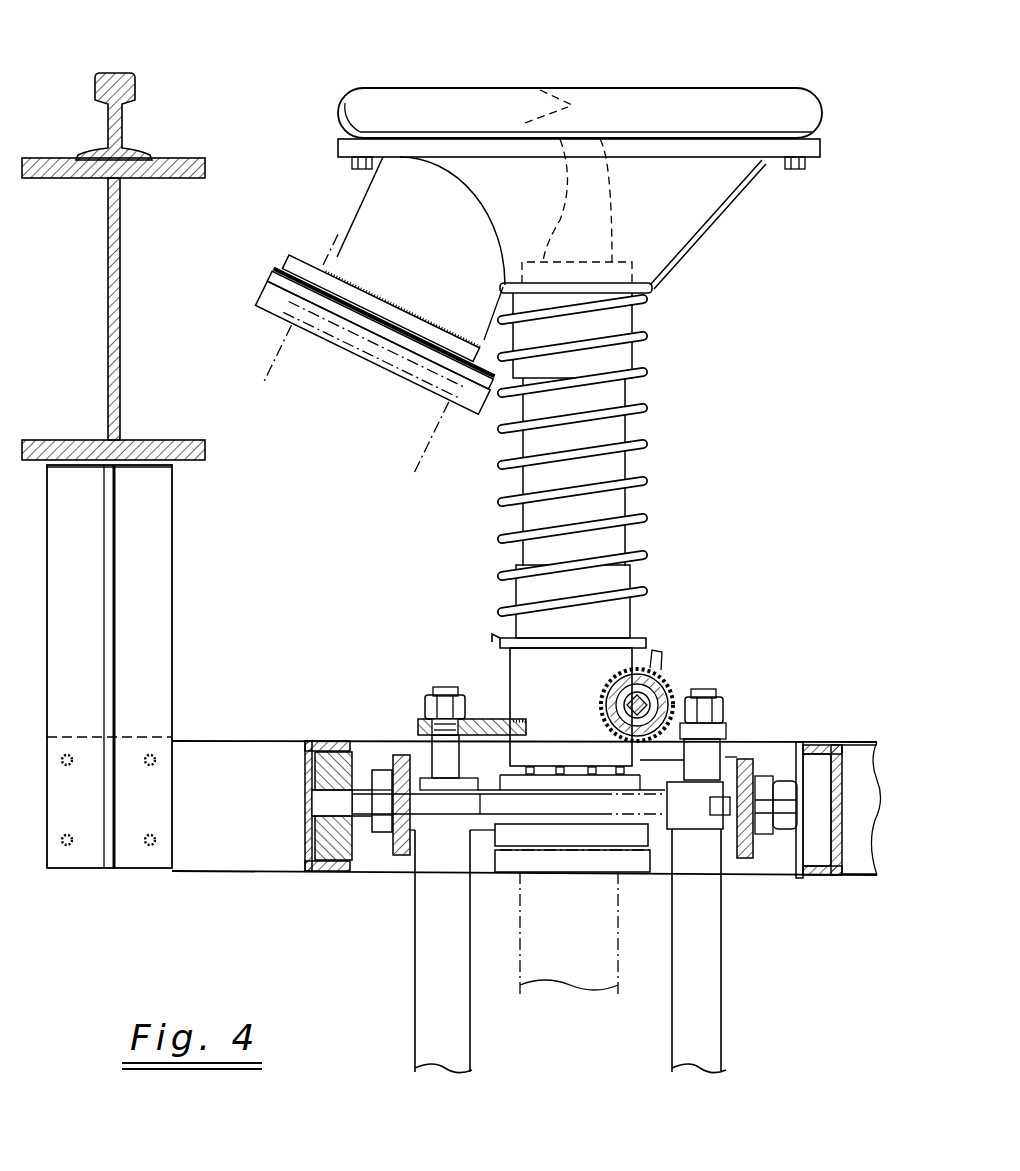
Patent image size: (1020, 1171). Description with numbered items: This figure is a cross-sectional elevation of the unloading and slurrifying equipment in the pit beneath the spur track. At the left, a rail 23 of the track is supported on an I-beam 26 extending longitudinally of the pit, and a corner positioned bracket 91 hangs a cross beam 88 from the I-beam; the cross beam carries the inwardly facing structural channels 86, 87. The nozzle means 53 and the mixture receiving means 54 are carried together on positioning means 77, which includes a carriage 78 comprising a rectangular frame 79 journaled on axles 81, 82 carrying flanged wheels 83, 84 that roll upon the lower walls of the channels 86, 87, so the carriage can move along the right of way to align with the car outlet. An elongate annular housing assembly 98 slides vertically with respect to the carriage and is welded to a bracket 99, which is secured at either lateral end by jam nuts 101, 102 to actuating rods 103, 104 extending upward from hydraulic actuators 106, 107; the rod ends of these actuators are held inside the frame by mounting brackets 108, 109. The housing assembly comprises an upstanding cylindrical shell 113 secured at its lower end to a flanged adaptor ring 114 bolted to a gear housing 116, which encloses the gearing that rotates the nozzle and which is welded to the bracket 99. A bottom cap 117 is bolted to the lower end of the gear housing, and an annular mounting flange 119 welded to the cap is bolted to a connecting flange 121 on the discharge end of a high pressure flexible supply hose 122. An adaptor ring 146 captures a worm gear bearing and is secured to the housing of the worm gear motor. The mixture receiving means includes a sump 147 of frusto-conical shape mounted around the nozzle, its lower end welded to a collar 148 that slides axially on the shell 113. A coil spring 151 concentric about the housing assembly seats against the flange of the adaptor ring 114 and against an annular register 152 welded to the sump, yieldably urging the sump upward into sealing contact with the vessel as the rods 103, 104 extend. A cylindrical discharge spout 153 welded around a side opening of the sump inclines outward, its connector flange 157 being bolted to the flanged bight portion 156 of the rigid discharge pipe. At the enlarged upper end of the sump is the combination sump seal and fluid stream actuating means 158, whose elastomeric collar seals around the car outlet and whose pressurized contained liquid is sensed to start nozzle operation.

The rail 23 is at (122, 128).
The I-beam 26 is at (120, 320).
The nozzle means 53 is at (602, 133).
The mixture receiving means 54 is at (702, 237).
The positioning means 77 is at (350, 907).
The carriage 78 is at (738, 756).
The rectangular frame 79 is at (420, 757).
The axle 81 is at (782, 812).
The axle 82 is at (462, 836).
The flanged wheel 83 is at (330, 832).
The flanged wheel 84 is at (812, 775).
The structural channel 86 is at (307, 765).
The structural channel 87 is at (832, 875).
The cross beam 88 is at (262, 808).
The bracket 91 is at (160, 658).
The housing assembly 98 is at (632, 462).
The bracket 99 is at (483, 718).
The jam nut 101 is at (432, 710).
The jam nut 102 is at (719, 703).
The actuating rod 103 is at (450, 763).
The actuating rod 104 is at (692, 762).
The actuator 106 is at (414, 1012).
The actuator 107 is at (730, 1015).
The mounting bracket 108 is at (406, 858).
The mounting bracket 109 is at (700, 833).
The cylindrical shell 113 is at (518, 480).
The flanged adaptor ring 114 is at (495, 637).
The gear housing 116 is at (578, 688).
The bottom cap 117 is at (617, 790).
The annular mounting flange 119 is at (652, 858).
The connecting flange 121 is at (486, 858).
The flexible supply hose 122 is at (515, 950).
The adaptor ring 146 is at (662, 676).
The sump 147 is at (712, 200).
The collar 148 is at (650, 352).
The coil spring 151 is at (648, 507).
The annular register 152 is at (655, 290).
The cylindrical discharge spout 153 is at (356, 203).
The flanged bight portion 156 is at (275, 352).
The connector flange 157 is at (280, 266).
The combination sump seal and fluid stream actuating means 158 is at (344, 88).